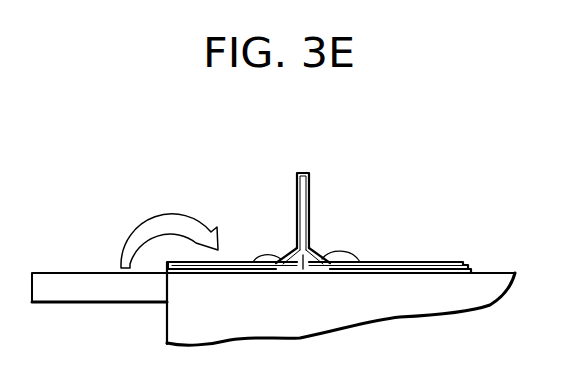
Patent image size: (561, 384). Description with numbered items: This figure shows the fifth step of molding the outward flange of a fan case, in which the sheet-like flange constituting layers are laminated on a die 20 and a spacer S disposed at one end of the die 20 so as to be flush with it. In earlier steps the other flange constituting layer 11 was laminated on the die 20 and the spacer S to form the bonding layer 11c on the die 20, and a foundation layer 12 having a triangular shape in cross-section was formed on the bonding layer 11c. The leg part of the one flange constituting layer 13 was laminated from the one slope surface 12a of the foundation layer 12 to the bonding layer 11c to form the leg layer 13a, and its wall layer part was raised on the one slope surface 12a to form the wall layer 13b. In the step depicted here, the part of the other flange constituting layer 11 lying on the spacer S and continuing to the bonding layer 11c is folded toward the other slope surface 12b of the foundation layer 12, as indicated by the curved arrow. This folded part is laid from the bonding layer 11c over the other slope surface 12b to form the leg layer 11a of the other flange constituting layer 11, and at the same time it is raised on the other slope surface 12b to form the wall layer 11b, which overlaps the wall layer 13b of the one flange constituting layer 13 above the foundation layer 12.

The spacer S is at (90, 304).
The die 20 is at (357, 320).
The other flange constituting layer 11 is at (227, 199).
The leg layer 11a is at (238, 262).
The wall layer 11b is at (283, 218).
The bonding layer 11c is at (192, 270).
The one flange constituting layer 13 is at (390, 218).
The leg layer 13a is at (337, 207).
The wall layer 13b is at (310, 218).
The foundation layer 12 is at (335, 317).
The one slope surface 12a is at (336, 262).
The other slope surface 12b is at (260, 266).